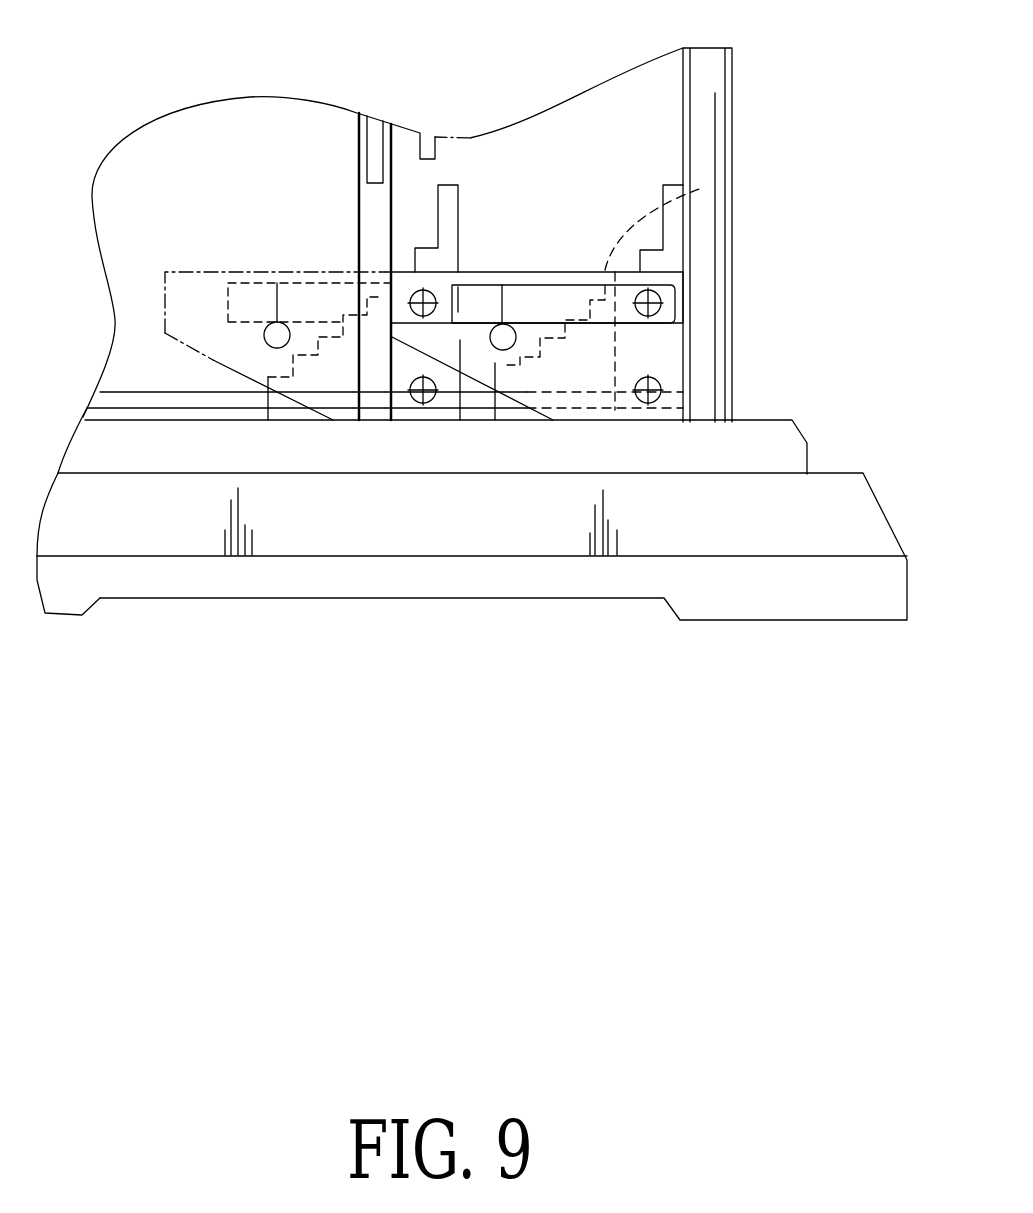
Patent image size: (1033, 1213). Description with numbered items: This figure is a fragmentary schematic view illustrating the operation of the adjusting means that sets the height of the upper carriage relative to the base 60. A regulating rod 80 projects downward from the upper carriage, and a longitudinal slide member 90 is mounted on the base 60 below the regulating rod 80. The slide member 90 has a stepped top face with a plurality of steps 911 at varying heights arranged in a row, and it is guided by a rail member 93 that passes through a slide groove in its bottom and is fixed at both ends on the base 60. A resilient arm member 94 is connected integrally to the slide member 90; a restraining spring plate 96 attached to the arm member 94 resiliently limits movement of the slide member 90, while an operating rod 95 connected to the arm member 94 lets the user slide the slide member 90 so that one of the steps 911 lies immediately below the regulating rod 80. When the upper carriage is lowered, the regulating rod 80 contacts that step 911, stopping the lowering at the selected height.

The base 60 is at (767, 636).
The regulating rod 80 is at (442, 136).
The slide member 90 is at (592, 359).
The steps 911 is at (652, 248).
The rail member 93 is at (183, 398).
The resilient arm member 94 is at (668, 303).
The operating rod 95 is at (503, 350).
The restraining spring plate 96 is at (500, 293).